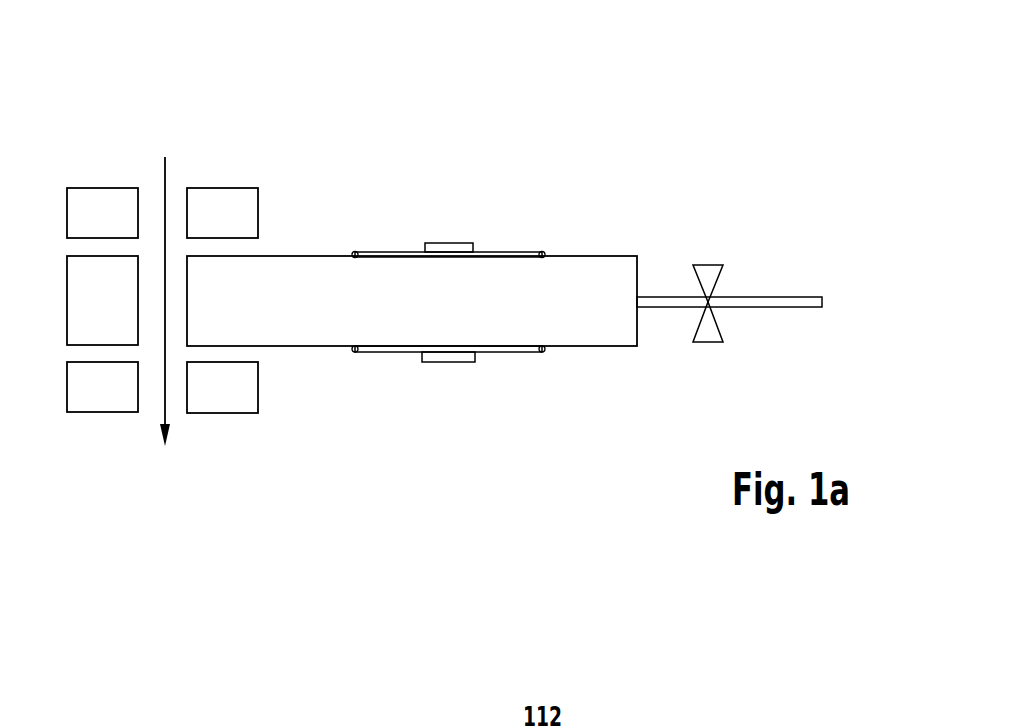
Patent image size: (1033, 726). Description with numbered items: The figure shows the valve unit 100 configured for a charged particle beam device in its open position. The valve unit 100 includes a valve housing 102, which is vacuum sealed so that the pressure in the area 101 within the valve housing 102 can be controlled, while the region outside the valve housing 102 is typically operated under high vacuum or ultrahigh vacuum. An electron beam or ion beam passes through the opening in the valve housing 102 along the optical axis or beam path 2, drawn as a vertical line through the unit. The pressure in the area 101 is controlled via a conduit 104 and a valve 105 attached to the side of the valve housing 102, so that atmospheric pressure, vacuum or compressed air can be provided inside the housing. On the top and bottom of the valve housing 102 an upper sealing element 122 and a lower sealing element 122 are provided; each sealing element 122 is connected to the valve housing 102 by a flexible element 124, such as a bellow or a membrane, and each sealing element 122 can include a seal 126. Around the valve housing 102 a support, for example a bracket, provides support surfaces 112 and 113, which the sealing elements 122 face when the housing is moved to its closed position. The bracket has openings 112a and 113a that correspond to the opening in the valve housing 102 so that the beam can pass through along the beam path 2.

The valve unit 100 is at (624, 137).
The beam path 2 is at (166, 175).
The area within the valve housing 101 is at (128, 311).
The valve housing 102 is at (573, 256).
The conduit 104 is at (773, 296).
The valve 105 is at (715, 333).
The support surface 112 is at (222, 197).
The opening 112a is at (146, 171).
The support surface 113 is at (222, 405).
The opening 113a is at (146, 430).
The sealing element 122 is at (442, 248).
The flexible element 124 is at (354, 250).
The seal 126 is at (445, 362).